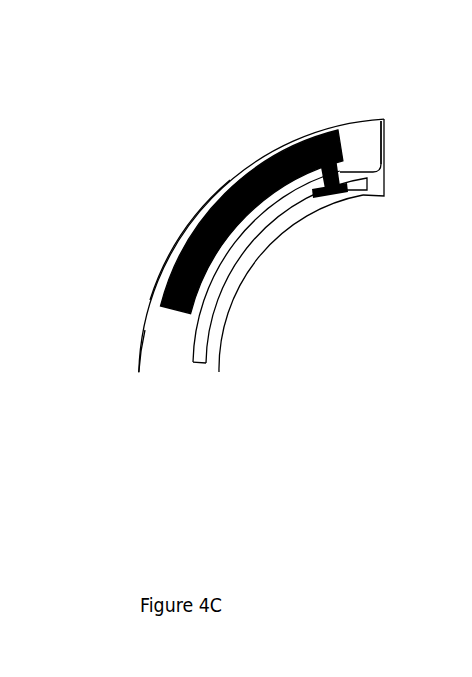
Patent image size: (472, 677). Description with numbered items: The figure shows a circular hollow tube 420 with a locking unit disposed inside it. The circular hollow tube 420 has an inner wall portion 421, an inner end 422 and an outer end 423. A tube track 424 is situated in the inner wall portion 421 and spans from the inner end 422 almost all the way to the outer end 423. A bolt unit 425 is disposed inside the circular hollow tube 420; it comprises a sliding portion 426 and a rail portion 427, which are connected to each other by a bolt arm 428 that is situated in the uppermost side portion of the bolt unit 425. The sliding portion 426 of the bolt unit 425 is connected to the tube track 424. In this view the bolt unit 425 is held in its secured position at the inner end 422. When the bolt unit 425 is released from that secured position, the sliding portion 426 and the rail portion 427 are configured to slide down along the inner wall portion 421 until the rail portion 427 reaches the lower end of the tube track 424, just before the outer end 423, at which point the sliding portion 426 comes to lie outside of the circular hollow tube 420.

The circular hollow tube 420 is at (183, 150).
The inner wall portion 421 is at (192, 217).
The inner end 422 is at (384, 118).
The outer end 423 is at (137, 370).
The tube track 424 is at (272, 215).
The bolt unit 425 is at (273, 150).
The sliding portion 426 is at (210, 273).
The rail portion 427 is at (333, 198).
The bolt arm 428 is at (373, 175).